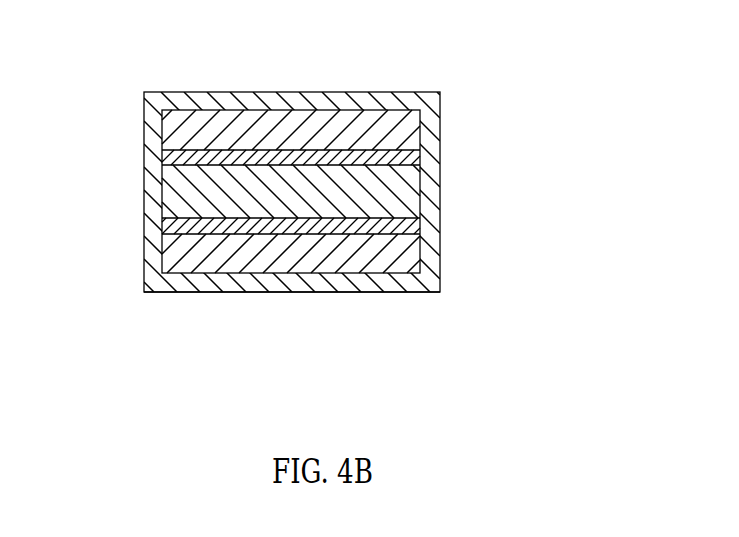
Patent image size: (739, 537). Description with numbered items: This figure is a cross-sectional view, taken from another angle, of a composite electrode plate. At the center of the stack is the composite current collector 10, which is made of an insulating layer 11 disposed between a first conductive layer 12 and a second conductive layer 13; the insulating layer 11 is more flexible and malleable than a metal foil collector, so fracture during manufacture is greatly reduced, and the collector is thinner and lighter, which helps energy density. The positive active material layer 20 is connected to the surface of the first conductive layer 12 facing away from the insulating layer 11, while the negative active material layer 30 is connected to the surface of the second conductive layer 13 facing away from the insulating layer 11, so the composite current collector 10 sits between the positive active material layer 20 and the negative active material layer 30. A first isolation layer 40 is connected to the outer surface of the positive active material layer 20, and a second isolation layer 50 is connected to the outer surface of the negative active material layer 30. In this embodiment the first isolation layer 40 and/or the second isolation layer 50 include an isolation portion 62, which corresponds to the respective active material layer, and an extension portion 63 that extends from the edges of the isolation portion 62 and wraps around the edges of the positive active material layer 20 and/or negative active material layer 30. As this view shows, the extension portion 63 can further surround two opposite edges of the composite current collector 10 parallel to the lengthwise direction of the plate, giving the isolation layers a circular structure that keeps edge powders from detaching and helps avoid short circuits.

The composite current collector 10 is at (281, 284).
The insulating layer 11 is at (260, 192).
The first conductive layer 12 is at (200, 155).
The second conductive layer 13 is at (338, 233).
The positive active material layer 20 is at (184, 134).
The negative active material layer 30 is at (395, 253).
The first isolation layer 40 is at (374, 103).
The second isolation layer 50 is at (386, 288).
The isolation portion 62 is at (384, 93).
The extension portion 63 is at (355, 153).